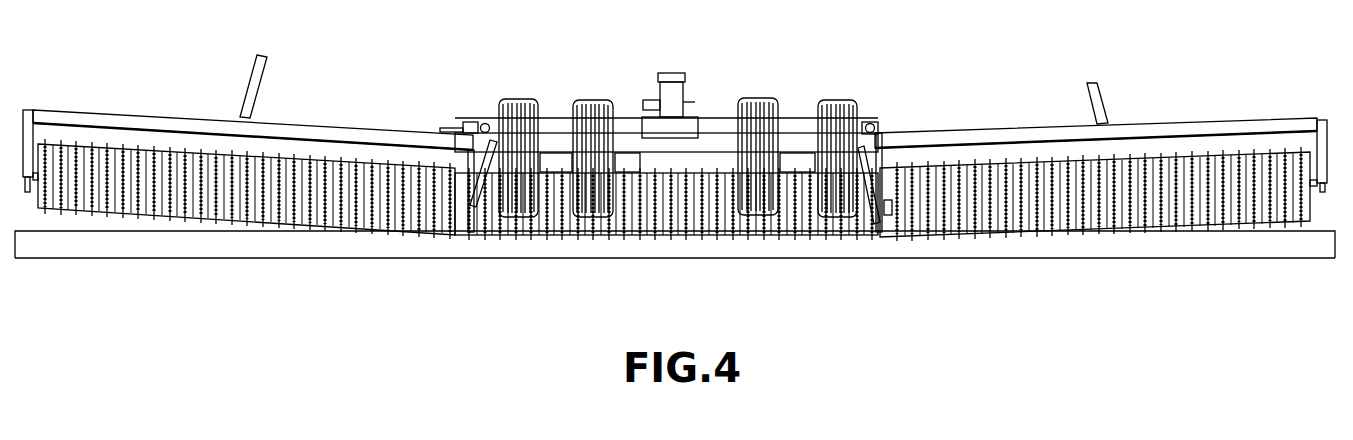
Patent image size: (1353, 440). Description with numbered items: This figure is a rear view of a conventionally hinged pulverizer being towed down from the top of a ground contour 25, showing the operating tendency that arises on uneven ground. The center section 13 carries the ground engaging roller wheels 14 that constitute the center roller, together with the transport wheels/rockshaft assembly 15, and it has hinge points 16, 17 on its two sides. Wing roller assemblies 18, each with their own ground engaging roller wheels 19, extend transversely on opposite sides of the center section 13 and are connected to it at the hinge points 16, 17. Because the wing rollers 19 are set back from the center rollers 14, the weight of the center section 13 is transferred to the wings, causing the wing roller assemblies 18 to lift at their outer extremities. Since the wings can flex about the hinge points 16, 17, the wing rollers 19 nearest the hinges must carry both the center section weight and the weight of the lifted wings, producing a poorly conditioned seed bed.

The center section 13 is at (666, 115).
The ground engaging roller wheels 14 is at (679, 238).
The transport wheels/rockshaft assembly 15 is at (787, 135).
The hinge point 16 is at (490, 122).
The hinge point 17 is at (872, 125).
The wing roller assembly 18 is at (275, 128).
The ground engaging roller wheels 19 is at (168, 217).
The ground contour 25 is at (365, 250).